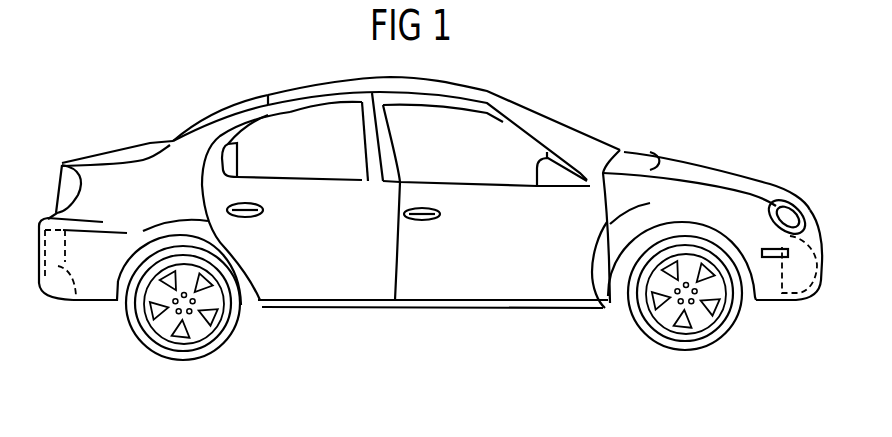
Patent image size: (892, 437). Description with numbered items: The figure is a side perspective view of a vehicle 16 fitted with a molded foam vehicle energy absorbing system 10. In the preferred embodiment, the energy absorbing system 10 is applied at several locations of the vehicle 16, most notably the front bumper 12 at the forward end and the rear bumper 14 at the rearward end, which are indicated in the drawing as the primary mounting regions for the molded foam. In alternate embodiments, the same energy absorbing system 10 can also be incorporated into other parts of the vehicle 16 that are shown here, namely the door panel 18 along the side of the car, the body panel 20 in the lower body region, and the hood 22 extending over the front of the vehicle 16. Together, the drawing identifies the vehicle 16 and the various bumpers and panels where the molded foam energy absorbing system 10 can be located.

The molded foam vehicle energy absorbing system 10 is at (740, 132).
The front bumper 12 is at (783, 297).
The rear bumper 14 is at (73, 299).
The vehicle 16 is at (477, 90).
The door panel 18 is at (466, 282).
The body panel 20 is at (613, 313).
The hood 22 is at (754, 179).